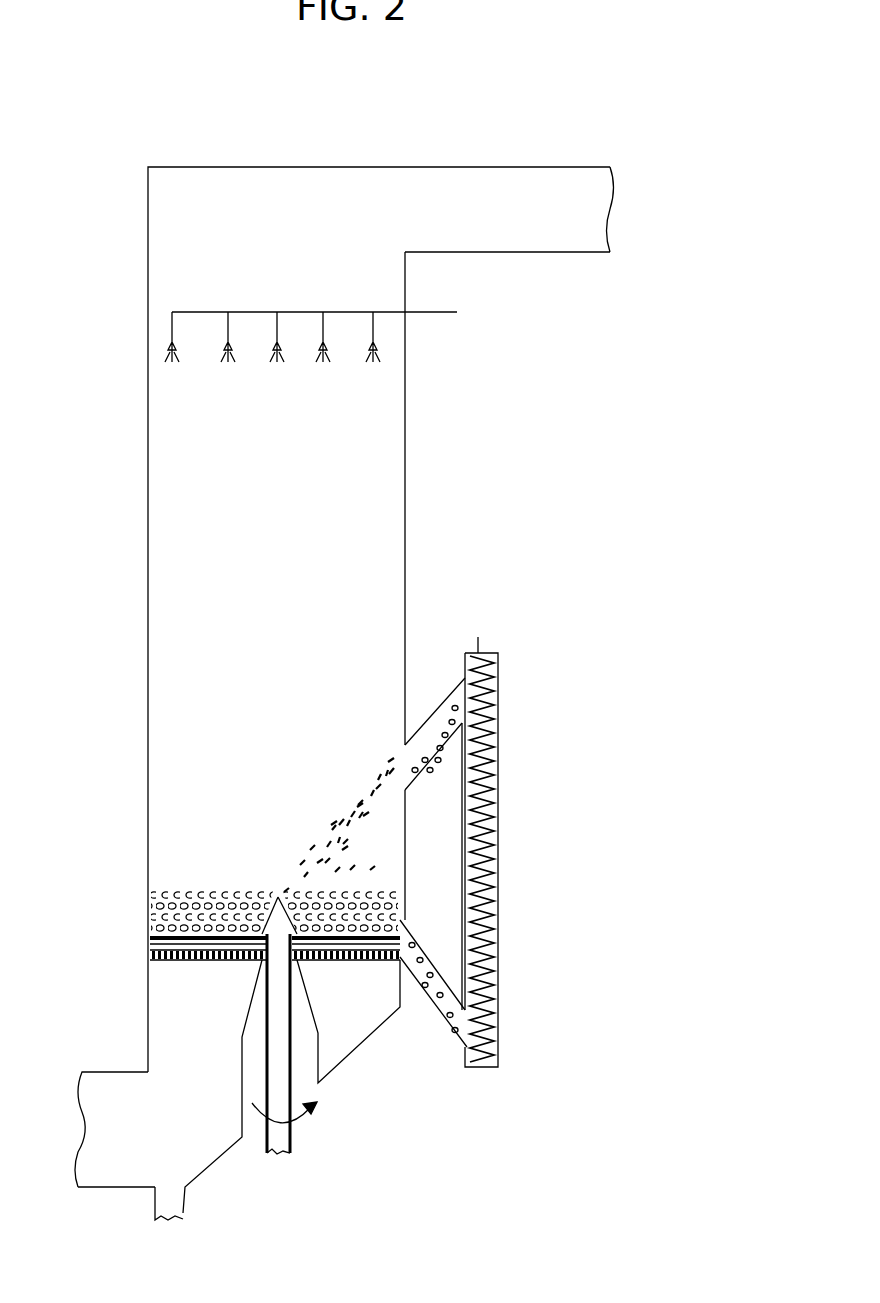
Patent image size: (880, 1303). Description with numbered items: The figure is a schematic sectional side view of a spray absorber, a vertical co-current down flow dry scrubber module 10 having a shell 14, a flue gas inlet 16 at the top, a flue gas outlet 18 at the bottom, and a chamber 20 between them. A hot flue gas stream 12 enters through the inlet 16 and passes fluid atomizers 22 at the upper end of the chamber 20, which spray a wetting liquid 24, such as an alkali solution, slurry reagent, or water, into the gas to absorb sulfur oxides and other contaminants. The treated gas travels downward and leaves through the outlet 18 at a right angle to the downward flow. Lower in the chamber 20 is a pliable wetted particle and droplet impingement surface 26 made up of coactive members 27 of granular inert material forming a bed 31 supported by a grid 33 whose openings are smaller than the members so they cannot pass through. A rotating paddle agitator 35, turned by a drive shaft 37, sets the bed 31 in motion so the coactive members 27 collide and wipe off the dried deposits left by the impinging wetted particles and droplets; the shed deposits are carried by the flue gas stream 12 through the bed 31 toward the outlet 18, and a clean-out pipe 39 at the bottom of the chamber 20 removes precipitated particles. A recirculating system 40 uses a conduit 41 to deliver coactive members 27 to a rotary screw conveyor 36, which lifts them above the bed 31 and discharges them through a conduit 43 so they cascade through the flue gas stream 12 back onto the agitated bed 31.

The dry scrubber module 10 is at (462, 552).
The flue gas stream 12 is at (432, 208).
The shell 14 is at (140, 550).
The flue gas inlet 16 is at (535, 262).
The flue gas outlet 18 is at (124, 1198).
The chamber 20 is at (300, 680).
The fluid atomizers 22 is at (297, 300).
The wetting liquid 24 is at (268, 370).
The pliable wetted particle and droplet impingement surface 26 is at (303, 828).
The coactive members 27 is at (360, 790).
The bed 31 is at (147, 898).
The grid 33 is at (178, 966).
The rotating paddle agitator 35 is at (140, 941).
The rotary screw conveyor 36 is at (505, 835).
The drive shaft 37 is at (300, 1137).
The clean-out pipe 39 is at (193, 1200).
The recirculating system 40 is at (532, 742).
The conduit 41 is at (437, 1012).
The conduit 43 is at (432, 700).